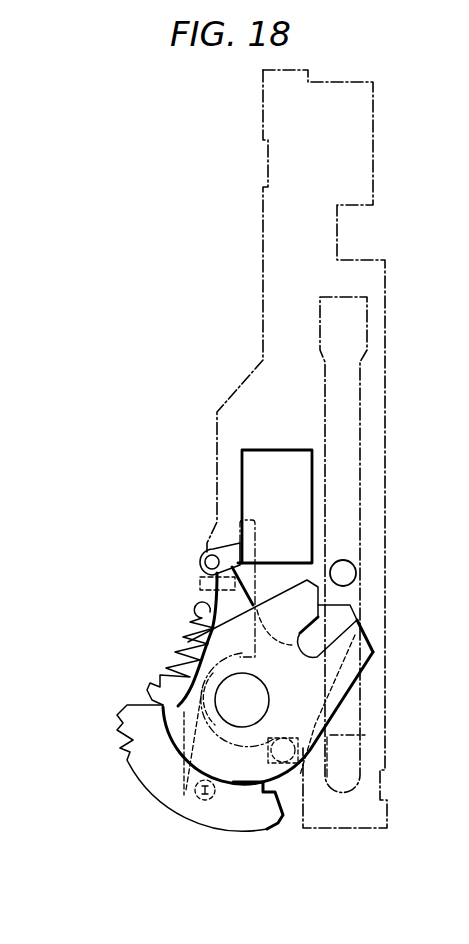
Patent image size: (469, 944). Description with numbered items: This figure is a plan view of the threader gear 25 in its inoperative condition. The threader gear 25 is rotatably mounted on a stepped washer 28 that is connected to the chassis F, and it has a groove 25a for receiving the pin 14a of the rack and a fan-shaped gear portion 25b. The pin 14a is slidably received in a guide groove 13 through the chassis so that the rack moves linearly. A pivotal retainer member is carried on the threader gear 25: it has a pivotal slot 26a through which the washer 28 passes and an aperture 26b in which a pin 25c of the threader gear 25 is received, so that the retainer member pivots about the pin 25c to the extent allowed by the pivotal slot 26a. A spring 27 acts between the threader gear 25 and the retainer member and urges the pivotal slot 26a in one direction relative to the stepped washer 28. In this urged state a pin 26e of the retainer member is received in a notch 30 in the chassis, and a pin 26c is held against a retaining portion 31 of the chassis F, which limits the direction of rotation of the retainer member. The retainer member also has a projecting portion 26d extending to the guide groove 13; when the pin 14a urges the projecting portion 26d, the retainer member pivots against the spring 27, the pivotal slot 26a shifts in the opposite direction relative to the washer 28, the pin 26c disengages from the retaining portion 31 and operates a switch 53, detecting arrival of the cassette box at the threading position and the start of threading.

The chassis F is at (350, 152).
The guide groove 13 is at (357, 433).
The pin 14a is at (347, 570).
The threader gear 25 is at (370, 660).
The groove 25a is at (367, 645).
The gear portion 25b is at (117, 738).
The pin 25c is at (258, 745).
The pivotal slot 26a is at (190, 705).
The aperture 26b is at (205, 810).
The pin 26c is at (200, 578).
The projecting portion 26d is at (363, 608).
The pin 26e is at (285, 773).
The spring 27 is at (170, 653).
The stepped washer 28 is at (263, 697).
The notch 30 is at (363, 737).
The retaining portion 31 is at (200, 548).
The switch 53 is at (262, 475).